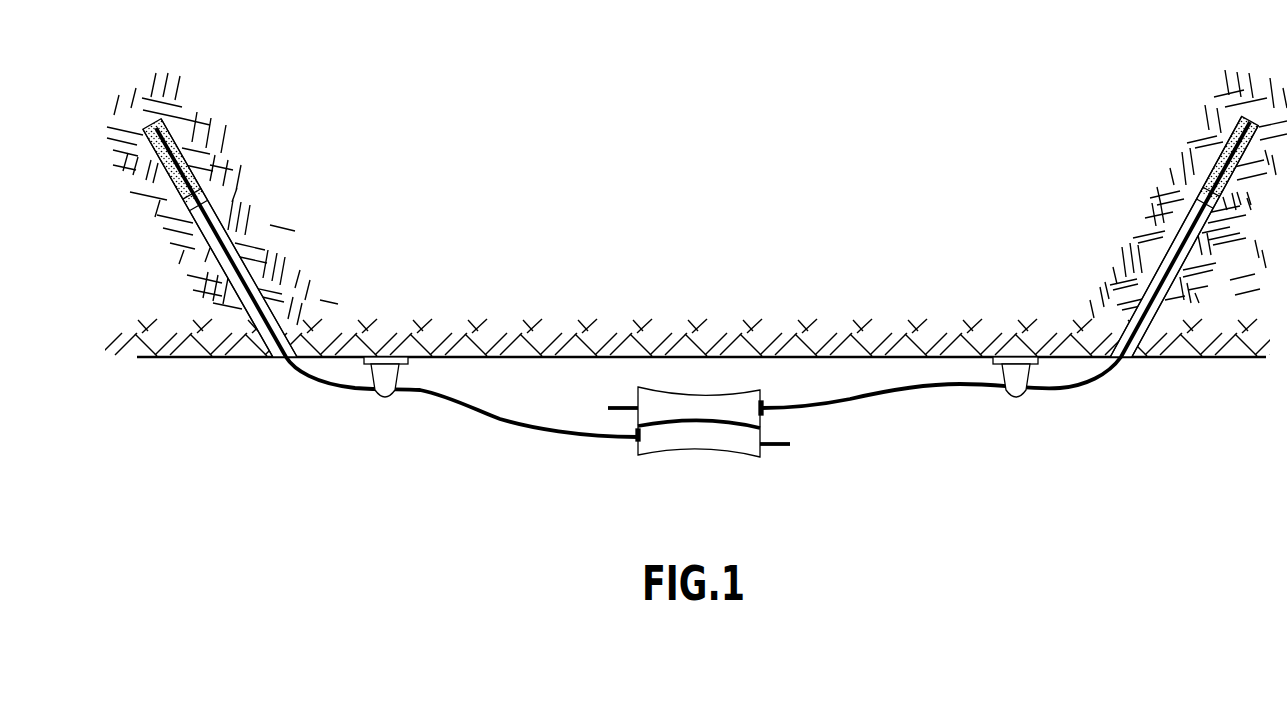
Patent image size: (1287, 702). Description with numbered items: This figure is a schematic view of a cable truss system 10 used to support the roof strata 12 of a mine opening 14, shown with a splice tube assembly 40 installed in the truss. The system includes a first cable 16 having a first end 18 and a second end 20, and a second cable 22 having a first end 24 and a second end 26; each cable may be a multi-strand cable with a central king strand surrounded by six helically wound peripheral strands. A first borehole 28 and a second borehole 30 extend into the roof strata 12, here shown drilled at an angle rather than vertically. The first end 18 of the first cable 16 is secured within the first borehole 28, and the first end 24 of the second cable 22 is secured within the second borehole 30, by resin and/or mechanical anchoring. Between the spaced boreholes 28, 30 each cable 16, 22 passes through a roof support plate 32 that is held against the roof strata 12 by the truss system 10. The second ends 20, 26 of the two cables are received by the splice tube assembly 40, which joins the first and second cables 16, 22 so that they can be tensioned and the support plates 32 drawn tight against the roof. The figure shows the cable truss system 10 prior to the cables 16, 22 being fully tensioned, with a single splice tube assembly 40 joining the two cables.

The cable truss system 10 is at (350, 464).
The roof strata 12 is at (583, 265).
The mine opening 14 is at (968, 468).
The first cable 16 is at (494, 416).
The first end of first cable 18 is at (160, 122).
The second end of first cable 20 is at (778, 445).
The second cable 22 is at (913, 387).
The first end of second cable 24 is at (1234, 128).
The second end of second cable 26 is at (623, 405).
The first borehole 28 is at (238, 260).
The second borehole 30 is at (1168, 232).
The roof support plate 32 is at (375, 386).
The splice tube assembly 40 is at (660, 452).